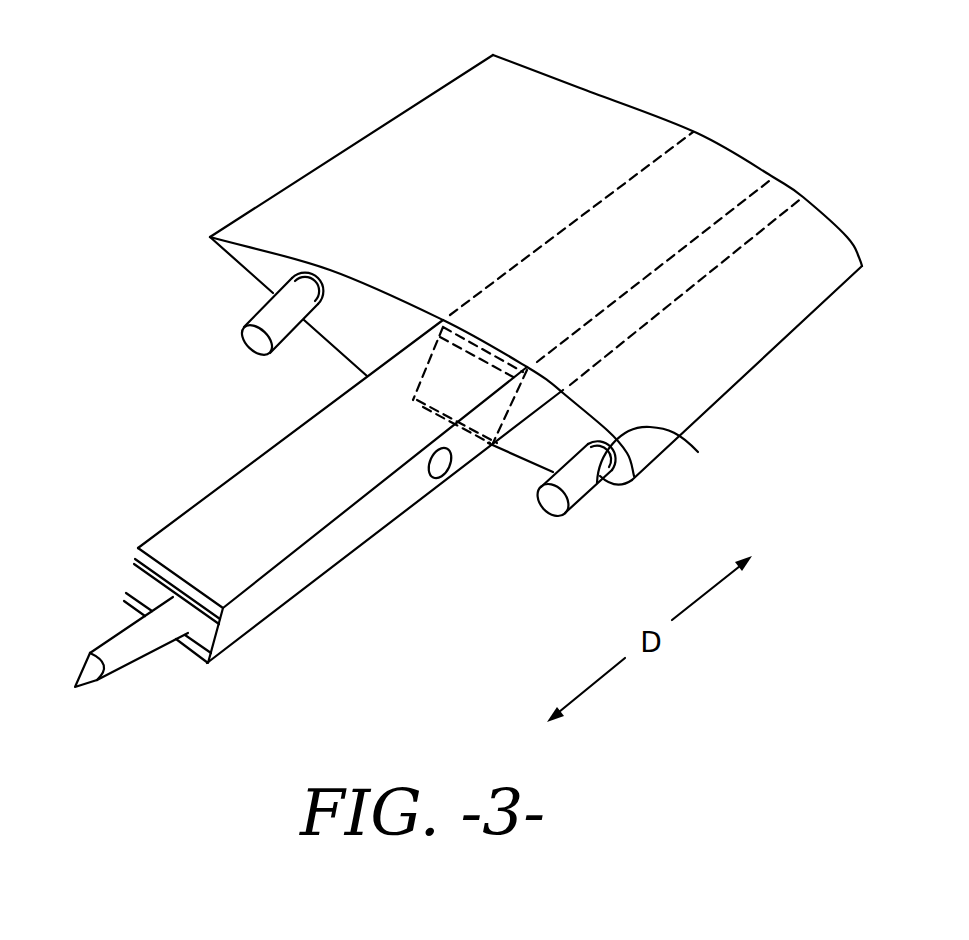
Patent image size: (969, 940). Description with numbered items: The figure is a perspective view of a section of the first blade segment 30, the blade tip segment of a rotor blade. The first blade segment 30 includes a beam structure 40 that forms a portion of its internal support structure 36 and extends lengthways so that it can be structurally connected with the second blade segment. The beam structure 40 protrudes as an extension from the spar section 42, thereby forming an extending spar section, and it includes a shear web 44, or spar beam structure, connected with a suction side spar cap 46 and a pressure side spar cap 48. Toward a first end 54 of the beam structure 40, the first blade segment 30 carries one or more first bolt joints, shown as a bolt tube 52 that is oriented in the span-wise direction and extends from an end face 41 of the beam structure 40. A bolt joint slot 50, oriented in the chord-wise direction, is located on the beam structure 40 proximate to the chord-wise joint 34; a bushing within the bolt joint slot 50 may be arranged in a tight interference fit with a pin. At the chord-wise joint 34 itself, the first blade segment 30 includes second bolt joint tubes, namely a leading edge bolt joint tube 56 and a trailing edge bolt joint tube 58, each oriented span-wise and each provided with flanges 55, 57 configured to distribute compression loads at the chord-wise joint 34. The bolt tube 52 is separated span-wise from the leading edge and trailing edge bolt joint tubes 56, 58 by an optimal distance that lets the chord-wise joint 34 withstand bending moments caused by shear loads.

The first blade segment 30 is at (350, 147).
The chord-wise joint 34 is at (224, 279).
The internal support structure 36 is at (334, 588).
The beam structure 40 is at (267, 453).
The end face 41 is at (200, 632).
The spar section 42 is at (712, 165).
The shear web 44 is at (374, 516).
The suction side spar cap 46 is at (427, 410).
The pressure side spar cap 48 is at (473, 330).
The bolt joint slot 50 is at (450, 470).
The bolt tube 52 is at (130, 670).
The first end 54 is at (247, 655).
The flange 55 is at (668, 458).
The leading edge bolt joint tube 56 is at (552, 502).
The flange 57 is at (305, 270).
The trailing edge bolt joint tube 58 is at (240, 342).